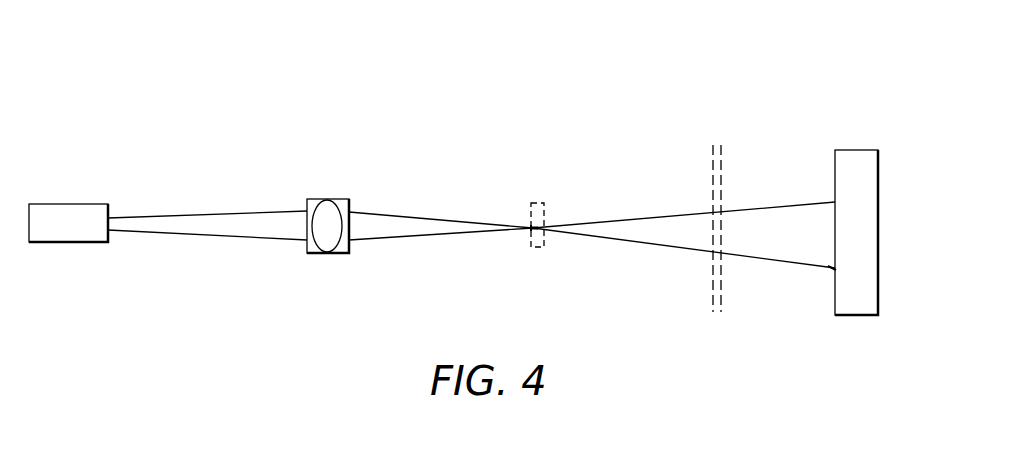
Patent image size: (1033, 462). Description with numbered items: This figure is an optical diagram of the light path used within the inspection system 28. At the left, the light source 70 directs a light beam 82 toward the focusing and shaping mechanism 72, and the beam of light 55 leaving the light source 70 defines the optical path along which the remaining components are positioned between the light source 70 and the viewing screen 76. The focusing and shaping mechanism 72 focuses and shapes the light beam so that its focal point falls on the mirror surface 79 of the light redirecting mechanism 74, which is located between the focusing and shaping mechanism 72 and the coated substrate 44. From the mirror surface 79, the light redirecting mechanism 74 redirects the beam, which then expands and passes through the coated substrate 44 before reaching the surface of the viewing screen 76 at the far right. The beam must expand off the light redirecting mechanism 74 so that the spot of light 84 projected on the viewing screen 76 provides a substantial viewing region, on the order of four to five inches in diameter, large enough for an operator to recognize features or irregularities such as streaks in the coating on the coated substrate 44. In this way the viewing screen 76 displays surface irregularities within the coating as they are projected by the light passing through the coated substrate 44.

The inspection system 28 is at (158, 106).
The light source 70 is at (85, 204).
The beam of light 55 is at (222, 213).
The light beam 82 is at (226, 238).
The focusing and shaping mechanism 72 is at (332, 194).
The light redirecting mechanism 74 is at (536, 256).
The mirror surface 79 is at (532, 205).
The coated substrate 44 is at (711, 290).
The viewing screen 76 is at (851, 158).
The spot of light 84 is at (829, 268).